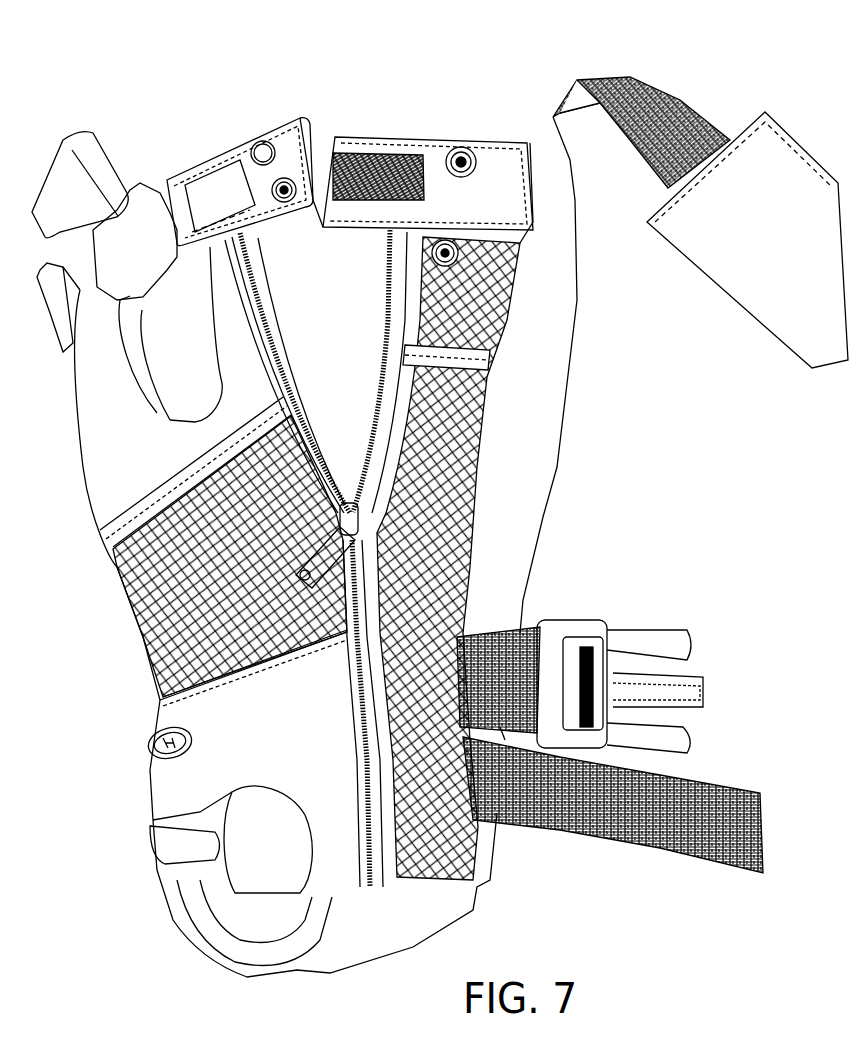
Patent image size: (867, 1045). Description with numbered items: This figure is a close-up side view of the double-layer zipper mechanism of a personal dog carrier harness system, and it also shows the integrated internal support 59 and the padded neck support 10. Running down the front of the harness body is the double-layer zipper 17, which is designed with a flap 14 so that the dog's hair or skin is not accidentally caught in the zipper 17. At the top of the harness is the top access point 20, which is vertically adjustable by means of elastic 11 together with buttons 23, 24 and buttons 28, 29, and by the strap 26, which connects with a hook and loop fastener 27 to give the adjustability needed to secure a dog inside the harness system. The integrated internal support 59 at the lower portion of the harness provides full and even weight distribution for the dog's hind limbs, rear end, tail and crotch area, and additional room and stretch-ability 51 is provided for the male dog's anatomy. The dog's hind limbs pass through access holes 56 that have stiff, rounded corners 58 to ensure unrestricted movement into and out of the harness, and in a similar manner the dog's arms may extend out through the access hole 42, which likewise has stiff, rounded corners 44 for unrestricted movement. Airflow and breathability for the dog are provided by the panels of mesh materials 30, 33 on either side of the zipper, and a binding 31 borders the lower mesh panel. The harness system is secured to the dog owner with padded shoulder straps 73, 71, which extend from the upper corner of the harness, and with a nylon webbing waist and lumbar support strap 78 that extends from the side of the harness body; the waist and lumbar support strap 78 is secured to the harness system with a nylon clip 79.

The padded neck support 10 is at (97, 140).
The elastic 11 is at (50, 313).
The flap 14 is at (353, 427).
The double-layer zipper 17 is at (360, 520).
The top access point 20 is at (240, 130).
The button 23 is at (260, 147).
The button 24 is at (293, 180).
The strap 26 is at (297, 147).
The hook and loop fastener 27 is at (373, 173).
The button 28 is at (467, 153).
The button 29 is at (453, 260).
The mesh material 30 is at (175, 605).
The binding band 31 is at (123, 538).
The mesh material 33 is at (450, 563).
The access hole 42 is at (173, 338).
The stiff, rounded corners 44 is at (153, 385).
The additional room and stretch-ability 51 is at (168, 800).
The access holes 56 is at (257, 883).
The stiff, rounded corners 58 is at (190, 880).
The integrated internal support 59 is at (190, 767).
The padded shoulder strap 71 is at (790, 197).
The padded shoulder strap 73 is at (685, 107).
The waist and lumbar support strap 78 is at (722, 780).
The nylon clip 79 is at (663, 623).